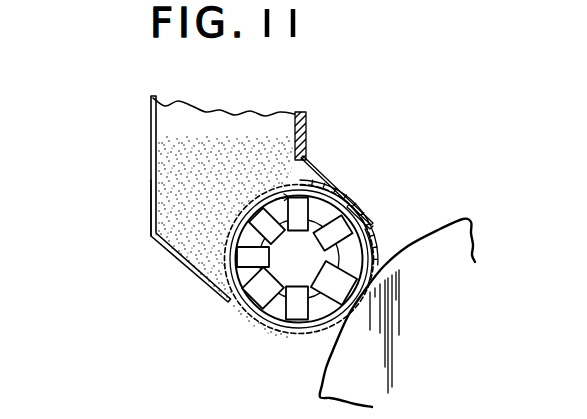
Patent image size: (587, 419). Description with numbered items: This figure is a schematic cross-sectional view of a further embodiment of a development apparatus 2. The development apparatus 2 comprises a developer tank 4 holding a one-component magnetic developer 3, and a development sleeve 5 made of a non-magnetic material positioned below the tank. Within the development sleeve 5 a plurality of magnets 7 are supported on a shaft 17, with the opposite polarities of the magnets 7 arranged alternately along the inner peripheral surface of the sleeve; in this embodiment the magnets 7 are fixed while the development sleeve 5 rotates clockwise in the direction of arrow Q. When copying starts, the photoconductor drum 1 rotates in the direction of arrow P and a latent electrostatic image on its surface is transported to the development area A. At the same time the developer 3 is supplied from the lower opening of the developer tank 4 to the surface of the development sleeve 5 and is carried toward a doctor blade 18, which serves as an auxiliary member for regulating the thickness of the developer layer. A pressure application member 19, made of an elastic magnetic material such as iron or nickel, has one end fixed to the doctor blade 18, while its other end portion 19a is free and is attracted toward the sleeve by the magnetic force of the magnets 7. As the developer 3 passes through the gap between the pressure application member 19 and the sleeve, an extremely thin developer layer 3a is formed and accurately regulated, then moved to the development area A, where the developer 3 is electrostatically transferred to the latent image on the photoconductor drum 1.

The photoconductor drum 1 is at (420, 238).
The development apparatus 2 is at (148, 136).
The magnetic developer 3 is at (206, 146).
The developer layer 3a is at (324, 182).
The developer tank 4 is at (150, 229).
The development sleeve 5 is at (240, 309).
The magnets 7 is at (298, 320).
The shaft 17 is at (371, 244).
The doctor blade 18 is at (296, 116).
The pressure application member 19 is at (312, 168).
The other end portion 19a is at (360, 206).
The arrow P is at (373, 317).
The development area A is at (362, 308).
The arrow Q is at (274, 195).